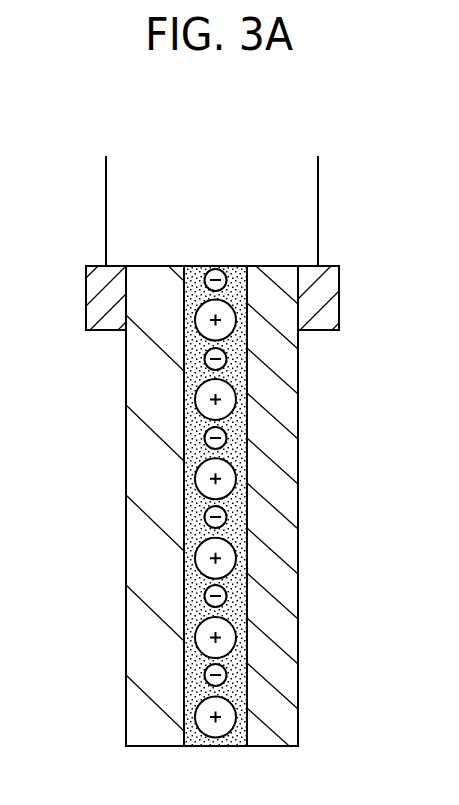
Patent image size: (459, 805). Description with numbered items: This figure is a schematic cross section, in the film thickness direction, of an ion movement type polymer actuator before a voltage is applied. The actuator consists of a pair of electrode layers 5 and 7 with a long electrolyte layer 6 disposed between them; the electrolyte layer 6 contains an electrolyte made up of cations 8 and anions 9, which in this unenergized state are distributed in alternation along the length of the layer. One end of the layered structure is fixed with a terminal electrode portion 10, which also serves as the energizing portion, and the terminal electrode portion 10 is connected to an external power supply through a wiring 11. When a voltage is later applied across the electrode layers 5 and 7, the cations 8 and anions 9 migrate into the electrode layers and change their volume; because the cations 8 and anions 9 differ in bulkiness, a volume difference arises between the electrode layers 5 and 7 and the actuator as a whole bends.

The electrode layer 5 is at (277, 410).
The electrolyte layer 6 is at (192, 481).
The electrode layer 7 is at (145, 363).
The cation 8 is at (193, 557).
The anion 9 is at (205, 597).
The terminal electrode portion 10 is at (92, 284).
The wiring 11 is at (318, 205).